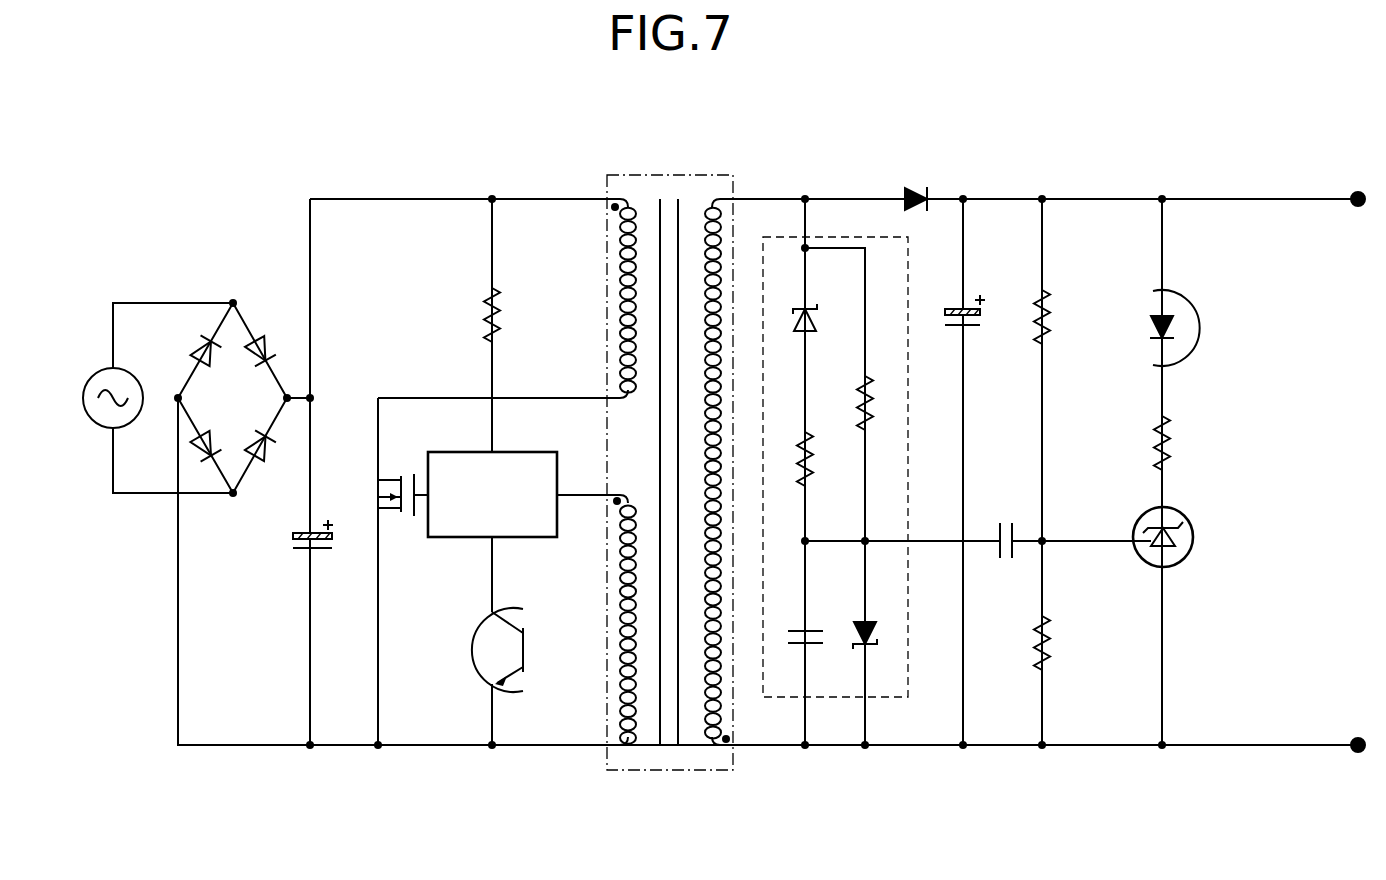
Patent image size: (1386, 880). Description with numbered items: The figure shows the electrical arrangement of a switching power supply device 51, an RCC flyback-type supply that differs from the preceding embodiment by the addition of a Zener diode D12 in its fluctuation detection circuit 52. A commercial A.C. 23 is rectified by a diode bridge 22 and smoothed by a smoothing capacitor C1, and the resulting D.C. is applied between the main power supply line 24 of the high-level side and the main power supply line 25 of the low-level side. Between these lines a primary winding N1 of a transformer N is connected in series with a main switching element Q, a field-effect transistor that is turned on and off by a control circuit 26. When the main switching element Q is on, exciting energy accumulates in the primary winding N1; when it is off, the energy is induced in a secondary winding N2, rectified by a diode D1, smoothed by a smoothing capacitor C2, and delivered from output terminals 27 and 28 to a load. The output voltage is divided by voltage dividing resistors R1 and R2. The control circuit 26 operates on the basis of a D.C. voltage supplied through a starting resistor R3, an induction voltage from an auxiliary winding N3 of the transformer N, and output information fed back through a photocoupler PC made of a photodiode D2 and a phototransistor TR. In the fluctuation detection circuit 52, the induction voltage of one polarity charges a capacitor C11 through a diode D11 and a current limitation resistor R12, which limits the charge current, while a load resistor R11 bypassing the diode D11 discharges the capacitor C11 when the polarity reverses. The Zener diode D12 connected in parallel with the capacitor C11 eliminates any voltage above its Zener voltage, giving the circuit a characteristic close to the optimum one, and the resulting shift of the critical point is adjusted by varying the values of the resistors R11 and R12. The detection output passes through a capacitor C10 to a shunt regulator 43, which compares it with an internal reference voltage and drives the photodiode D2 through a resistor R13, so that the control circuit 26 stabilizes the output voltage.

The switching power supply device 51 is at (185, 165).
The diode bridge 22 is at (256, 298).
The commercial A.C. 23 is at (100, 372).
The main power supply line 24 is at (528, 198).
The main power supply line 25 is at (535, 747).
The control circuit 26 is at (528, 450).
The output terminal 27 is at (1358, 207).
The output terminal 28 is at (1357, 753).
The fluctuation detection circuit 52 is at (832, 236).
The shunt regulator 43 is at (1195, 537).
The transformer N is at (665, 175).
The primary winding N1 is at (608, 291).
The secondary winding N2 is at (722, 750).
The auxiliary winding N3 is at (610, 558).
The smoothing capacitor C1 is at (292, 546).
The smoothing capacitor C2 is at (950, 310).
The capacitor C10 is at (1000, 525).
The capacitor C11 is at (820, 630).
The diode D1 is at (922, 190).
The photodiode D2 is at (1150, 322).
The diode D11 is at (818, 316).
The Zener diode D12 is at (875, 645).
The voltage dividing resistor R1 is at (1050, 294).
The voltage dividing resistor R2 is at (1050, 619).
The starting resistor R3 is at (485, 305).
The load resistor R11 is at (862, 378).
The current limitation resistor R12 is at (800, 482).
The resistor R13 is at (1175, 420).
The main switching element Q is at (421, 515).
The phototransistor TR is at (527, 652).
The photocoupler PC is at (468, 658).